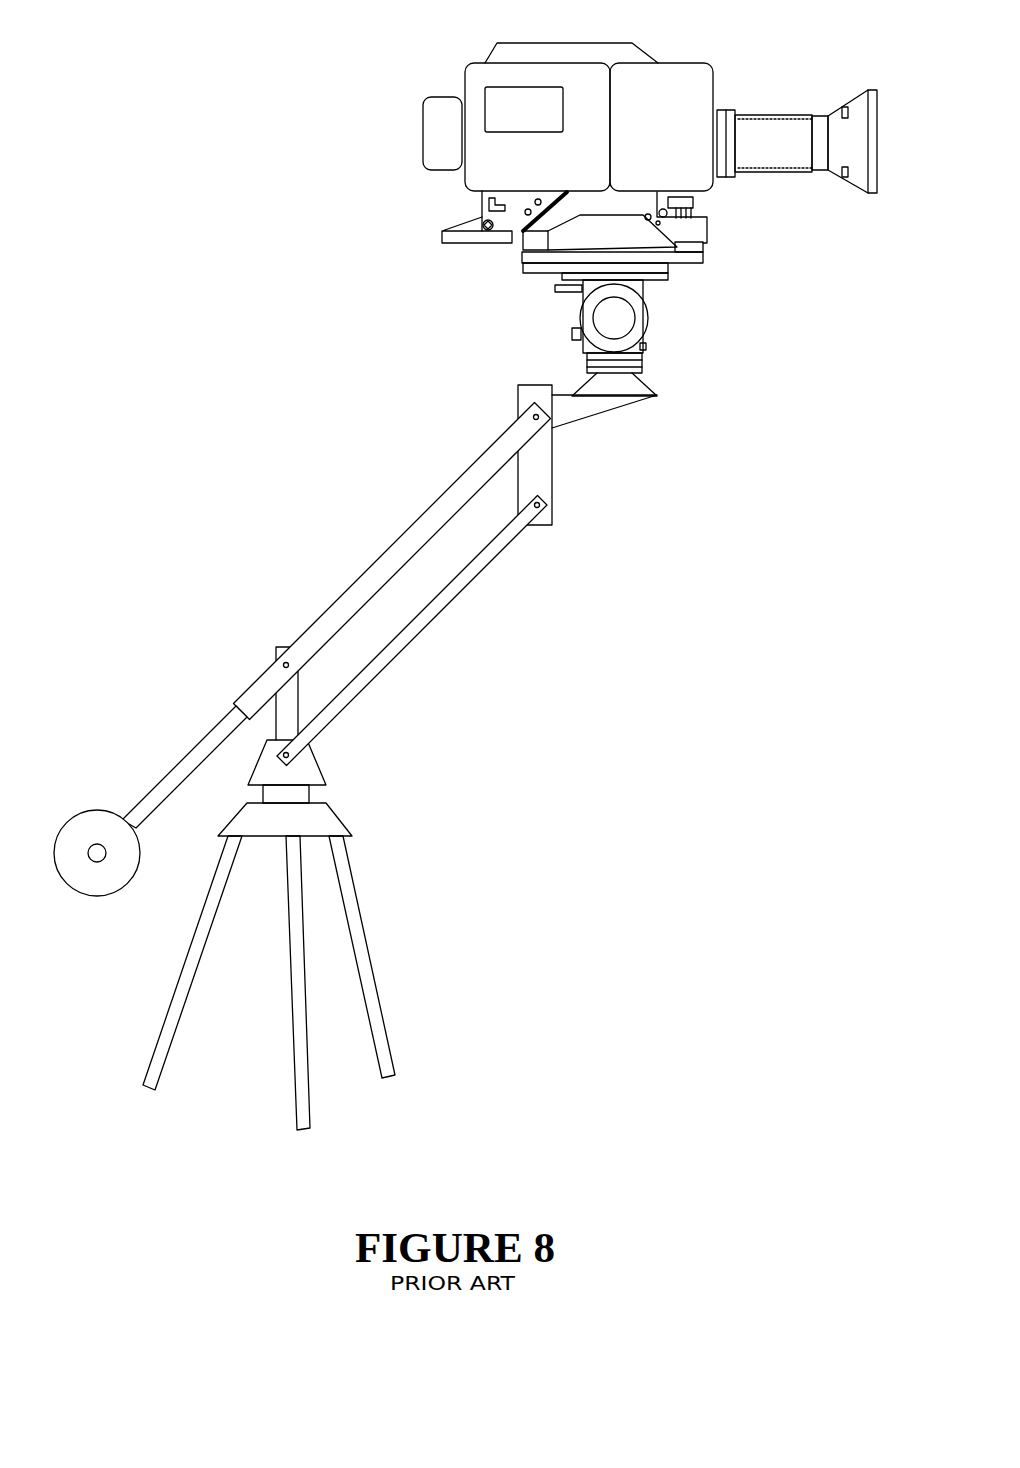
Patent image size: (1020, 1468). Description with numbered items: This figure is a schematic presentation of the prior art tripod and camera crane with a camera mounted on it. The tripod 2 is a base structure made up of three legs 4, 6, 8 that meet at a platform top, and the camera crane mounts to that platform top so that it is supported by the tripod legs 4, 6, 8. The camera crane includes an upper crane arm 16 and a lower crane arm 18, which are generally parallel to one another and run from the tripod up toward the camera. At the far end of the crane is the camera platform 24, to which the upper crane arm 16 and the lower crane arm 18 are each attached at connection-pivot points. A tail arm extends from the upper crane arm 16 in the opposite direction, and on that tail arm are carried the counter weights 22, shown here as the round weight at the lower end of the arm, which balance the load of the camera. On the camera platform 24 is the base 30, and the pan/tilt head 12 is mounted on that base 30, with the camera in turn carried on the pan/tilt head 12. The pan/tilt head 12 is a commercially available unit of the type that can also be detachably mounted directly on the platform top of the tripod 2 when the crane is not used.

The tripod 2 is at (503, 882).
The leg 4 is at (187, 978).
The leg 6 is at (298, 982).
The leg 8 is at (368, 970).
The pan/tilt head 12 is at (555, 316).
The upper crane arm 16 is at (398, 553).
The lower crane arm 18 is at (445, 600).
The counter weights 22 is at (87, 823).
The camera platform 24 is at (542, 462).
The base 30 is at (640, 387).